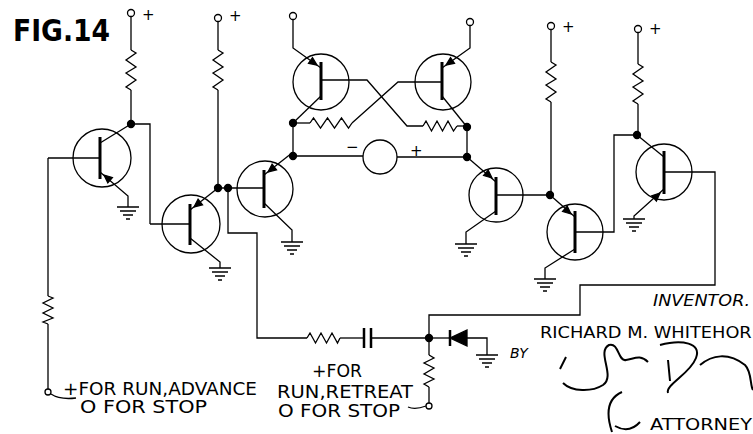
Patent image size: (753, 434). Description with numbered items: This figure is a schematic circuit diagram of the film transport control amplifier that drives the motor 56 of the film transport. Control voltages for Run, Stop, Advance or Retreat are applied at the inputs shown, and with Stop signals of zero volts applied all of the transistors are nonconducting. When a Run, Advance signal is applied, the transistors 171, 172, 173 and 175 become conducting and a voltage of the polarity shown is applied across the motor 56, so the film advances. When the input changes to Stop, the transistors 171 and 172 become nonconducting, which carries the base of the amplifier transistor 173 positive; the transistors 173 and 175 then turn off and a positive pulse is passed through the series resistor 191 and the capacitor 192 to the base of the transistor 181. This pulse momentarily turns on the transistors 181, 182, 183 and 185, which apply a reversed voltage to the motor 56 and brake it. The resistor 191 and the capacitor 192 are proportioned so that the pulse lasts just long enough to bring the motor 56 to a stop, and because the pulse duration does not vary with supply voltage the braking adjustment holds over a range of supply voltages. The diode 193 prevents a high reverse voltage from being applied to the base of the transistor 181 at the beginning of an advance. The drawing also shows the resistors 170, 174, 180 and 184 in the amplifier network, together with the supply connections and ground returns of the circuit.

The motor 56 is at (372, 173).
The resistor 170 is at (53, 301).
The transistor 171 is at (95, 131).
The transistor 172 is at (186, 196).
The amplifier transistor 173 is at (293, 199).
The resistor 174 is at (320, 133).
The transistor 175 is at (465, 72).
The resistor 180 is at (427, 368).
The transistor 181 is at (683, 146).
The transistor 182 is at (572, 204).
The transistor 183 is at (506, 168).
The resistor 184 is at (439, 134).
The transistor 185 is at (340, 58).
The series resistor 191 is at (330, 306).
The capacitor 192 is at (372, 331).
The diode 193 is at (457, 331).